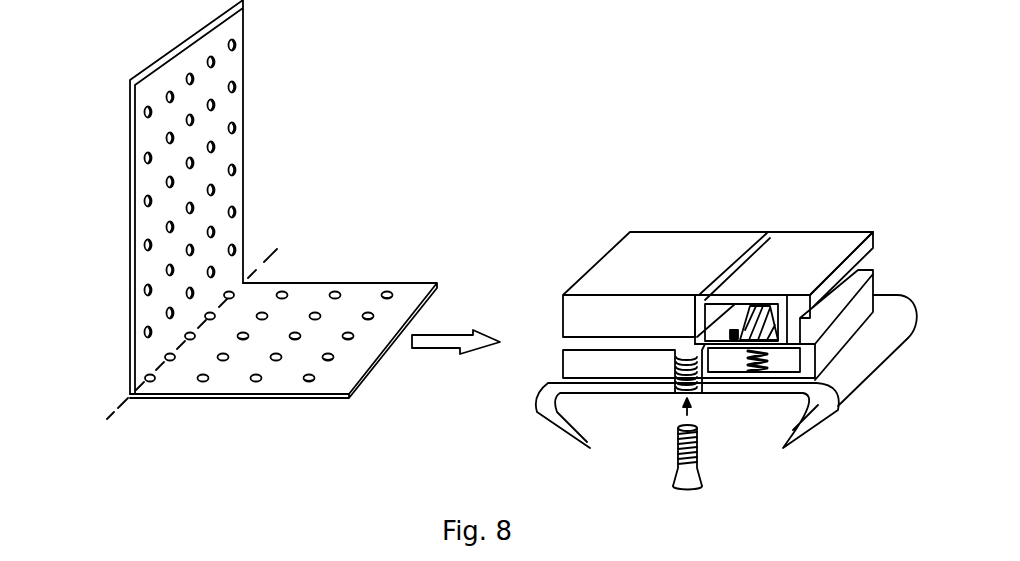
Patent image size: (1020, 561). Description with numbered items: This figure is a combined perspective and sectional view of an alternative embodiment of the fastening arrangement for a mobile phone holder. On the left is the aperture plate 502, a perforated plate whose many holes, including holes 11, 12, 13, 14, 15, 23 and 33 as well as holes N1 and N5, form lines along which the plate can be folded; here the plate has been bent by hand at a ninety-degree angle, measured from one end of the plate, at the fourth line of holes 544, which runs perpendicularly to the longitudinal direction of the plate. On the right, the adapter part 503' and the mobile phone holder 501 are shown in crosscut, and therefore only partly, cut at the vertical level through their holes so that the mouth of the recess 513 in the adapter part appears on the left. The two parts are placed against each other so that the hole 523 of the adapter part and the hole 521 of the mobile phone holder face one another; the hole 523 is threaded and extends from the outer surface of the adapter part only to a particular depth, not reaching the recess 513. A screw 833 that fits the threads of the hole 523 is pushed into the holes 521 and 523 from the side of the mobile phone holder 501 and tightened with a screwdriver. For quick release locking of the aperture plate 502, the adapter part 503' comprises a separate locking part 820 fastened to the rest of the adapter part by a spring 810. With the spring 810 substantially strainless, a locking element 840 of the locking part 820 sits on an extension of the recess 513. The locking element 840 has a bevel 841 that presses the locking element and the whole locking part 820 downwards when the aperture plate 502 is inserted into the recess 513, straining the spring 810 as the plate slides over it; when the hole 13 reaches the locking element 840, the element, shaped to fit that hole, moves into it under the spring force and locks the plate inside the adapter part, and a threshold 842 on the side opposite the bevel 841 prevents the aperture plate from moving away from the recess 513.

The hole N1 is at (144, 110).
The hole N5 is at (235, 42).
The aperture plate 502 is at (130, 203).
The line 544 is at (183, 338).
The hole 11 is at (309, 381).
The hole 12 is at (334, 358).
The hole 13 is at (354, 338).
The hole 14 is at (367, 315).
The hole 15 is at (388, 294).
The hole 23 is at (297, 334).
The hole 33 is at (243, 340).
The adapter part 503' is at (718, 244).
The recess 513 is at (607, 345).
The locking element 840 is at (729, 338).
The bevel 841 is at (717, 340).
The threshold 842 is at (741, 341).
The locking part 820 is at (838, 240).
The spring 810 is at (738, 361).
The mobile phone holder 501 is at (838, 407).
The hole 521 is at (689, 388).
The hole 523 is at (673, 360).
The screw 833 is at (698, 462).